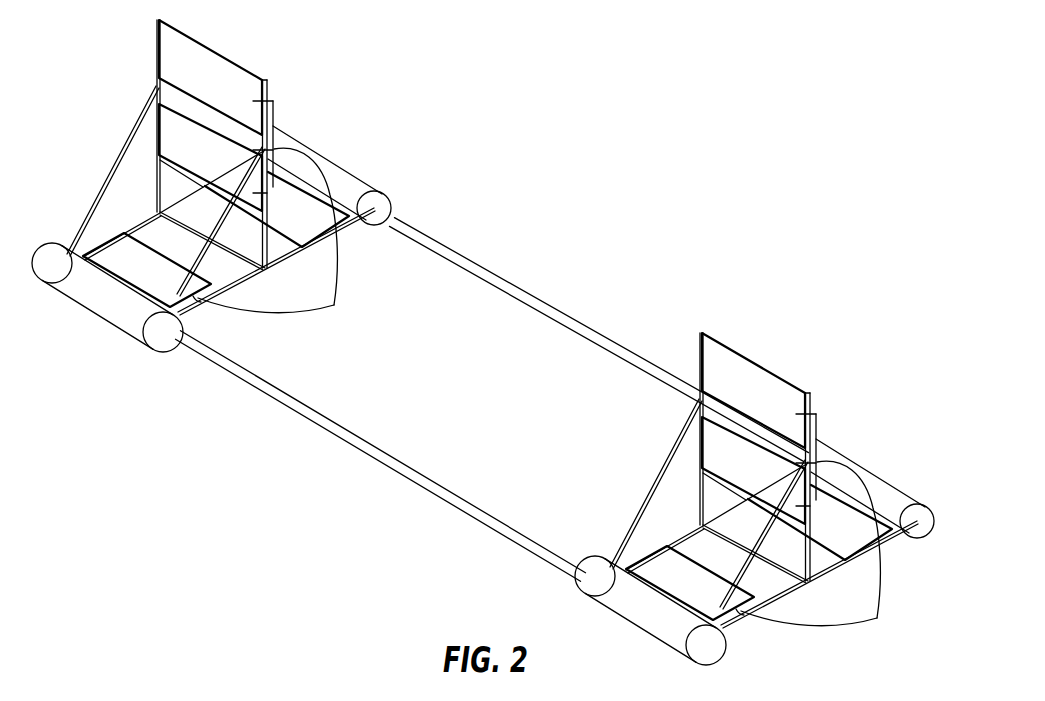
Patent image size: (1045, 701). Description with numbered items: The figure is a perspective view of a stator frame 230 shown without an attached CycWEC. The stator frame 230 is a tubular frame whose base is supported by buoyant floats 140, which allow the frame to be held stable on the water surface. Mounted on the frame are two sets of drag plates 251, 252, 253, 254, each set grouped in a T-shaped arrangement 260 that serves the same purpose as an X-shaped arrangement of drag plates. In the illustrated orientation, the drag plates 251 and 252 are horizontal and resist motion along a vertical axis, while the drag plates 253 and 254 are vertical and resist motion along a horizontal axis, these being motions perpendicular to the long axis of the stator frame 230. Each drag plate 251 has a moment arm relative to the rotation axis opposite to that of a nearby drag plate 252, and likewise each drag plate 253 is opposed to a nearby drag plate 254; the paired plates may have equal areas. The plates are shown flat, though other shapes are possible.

The stator frame 230 is at (590, 208).
The floats 140 is at (117, 304).
The drag plate 251 is at (160, 276).
The drag plate 252 is at (314, 223).
The drag plate 253 is at (222, 164).
The drag plate 254 is at (227, 89).
The T-shaped arrangement 260 is at (334, 305).